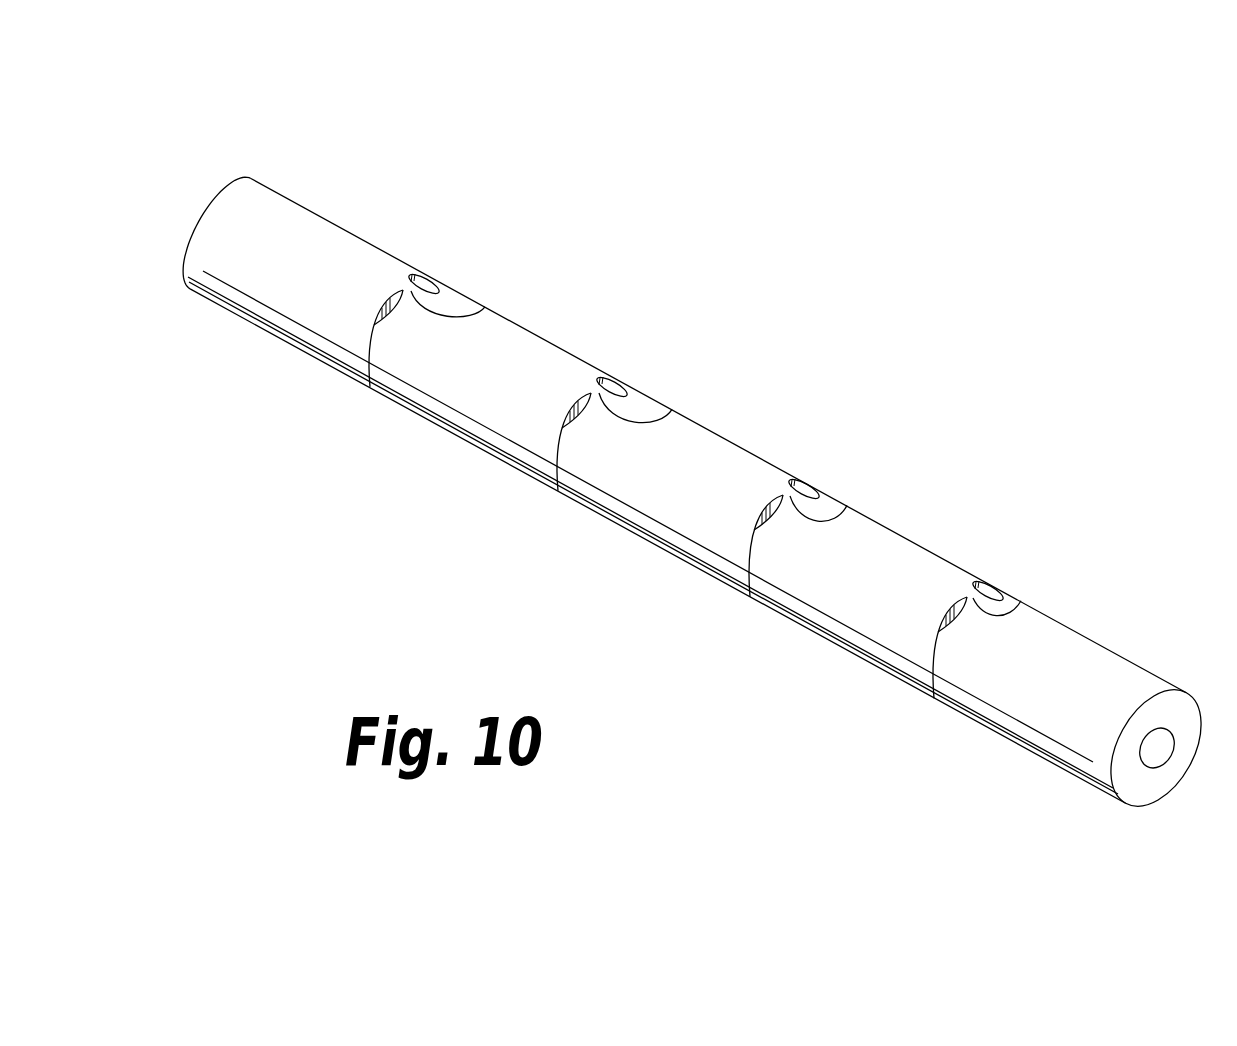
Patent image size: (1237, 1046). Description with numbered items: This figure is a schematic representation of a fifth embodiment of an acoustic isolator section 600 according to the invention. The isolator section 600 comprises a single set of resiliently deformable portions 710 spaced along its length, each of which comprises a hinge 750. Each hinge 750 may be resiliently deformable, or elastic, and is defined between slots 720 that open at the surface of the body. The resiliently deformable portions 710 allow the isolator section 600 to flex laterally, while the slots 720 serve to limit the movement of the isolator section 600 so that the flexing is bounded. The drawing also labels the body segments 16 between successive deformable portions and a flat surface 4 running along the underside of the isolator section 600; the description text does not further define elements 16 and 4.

The isolator section 600 is at (248, 156).
The shaft body 16 is at (701, 499).
The flat surface 4 is at (278, 336).
The resiliently deformable portion 710 is at (371, 333).
The slot 720 is at (432, 284).
The hinge 750 is at (485, 307).